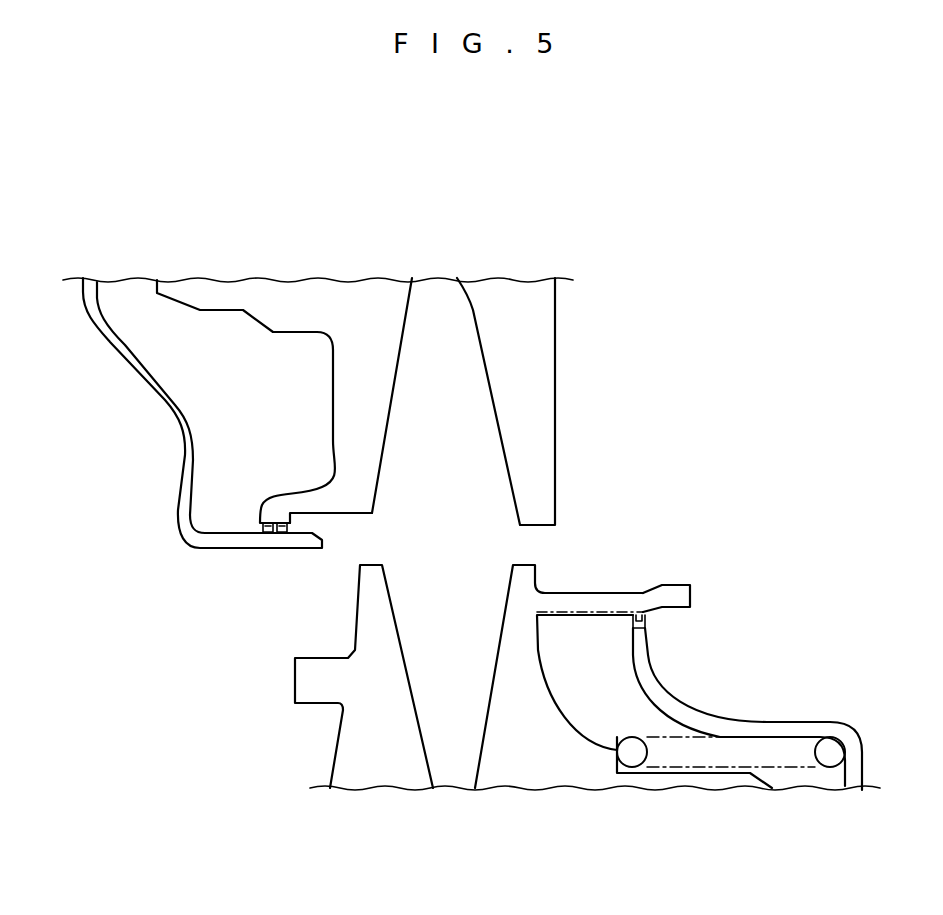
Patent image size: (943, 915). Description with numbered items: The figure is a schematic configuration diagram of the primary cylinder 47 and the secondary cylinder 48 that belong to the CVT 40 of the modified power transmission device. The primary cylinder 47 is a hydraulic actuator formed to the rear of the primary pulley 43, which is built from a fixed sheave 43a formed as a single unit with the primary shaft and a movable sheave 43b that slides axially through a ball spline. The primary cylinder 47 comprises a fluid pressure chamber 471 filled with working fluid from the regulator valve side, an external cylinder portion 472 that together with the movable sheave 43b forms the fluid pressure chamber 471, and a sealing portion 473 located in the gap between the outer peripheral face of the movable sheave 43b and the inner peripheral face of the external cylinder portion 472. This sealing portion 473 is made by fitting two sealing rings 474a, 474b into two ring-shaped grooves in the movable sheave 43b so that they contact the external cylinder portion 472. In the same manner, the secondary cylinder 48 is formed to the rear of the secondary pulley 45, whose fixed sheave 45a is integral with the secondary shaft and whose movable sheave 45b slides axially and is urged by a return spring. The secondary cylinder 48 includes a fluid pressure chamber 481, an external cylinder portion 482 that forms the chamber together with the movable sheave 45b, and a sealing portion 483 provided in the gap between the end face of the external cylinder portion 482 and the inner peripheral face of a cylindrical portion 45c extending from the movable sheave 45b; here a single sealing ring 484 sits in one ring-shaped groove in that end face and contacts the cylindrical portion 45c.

The CVT 40 is at (652, 465).
The primary pulley 43 is at (452, 348).
The fixed sheave 43a is at (368, 305).
The movable sheave 43b is at (506, 373).
The secondary pulley 45 is at (519, 717).
The fixed sheave 45a is at (395, 768).
The movable sheave 45b is at (530, 768).
The cylindrical portion 45c is at (677, 597).
The primary cylinder 47 is at (202, 443).
The fluid pressure chamber 471 is at (290, 415).
The external cylinder portion 472 is at (180, 500).
The sealing portion 473 is at (299, 525).
The sealing ring 474a is at (267, 534).
The sealing ring 474b is at (282, 534).
The secondary cylinder 48 is at (697, 687).
The fluid pressure chamber 481 is at (583, 716).
The external cylinder portion 482 is at (749, 730).
The sealing portion 483 is at (625, 620).
The sealing ring 484 is at (636, 612).